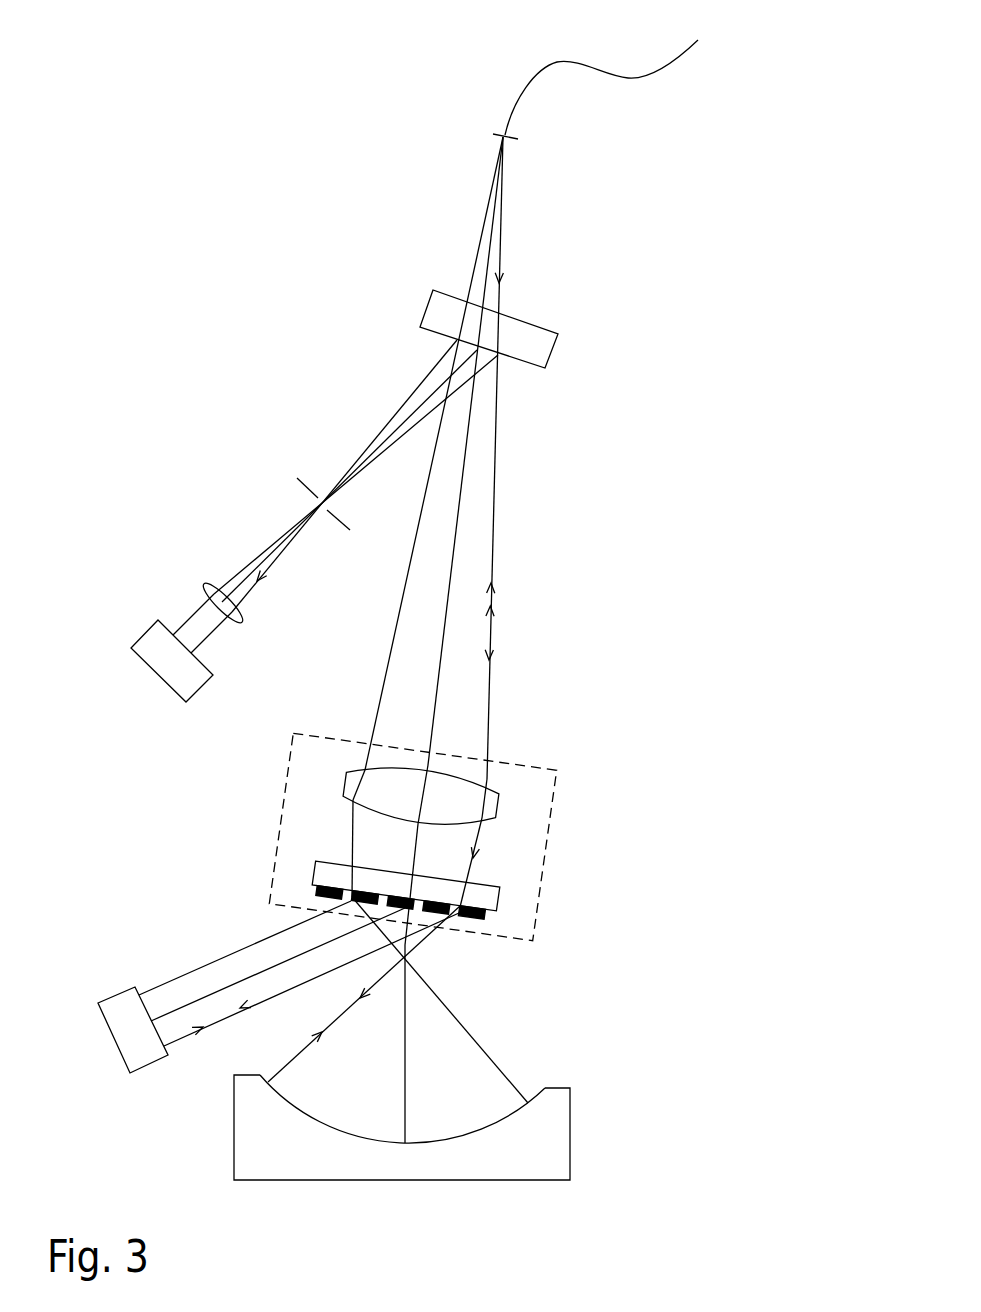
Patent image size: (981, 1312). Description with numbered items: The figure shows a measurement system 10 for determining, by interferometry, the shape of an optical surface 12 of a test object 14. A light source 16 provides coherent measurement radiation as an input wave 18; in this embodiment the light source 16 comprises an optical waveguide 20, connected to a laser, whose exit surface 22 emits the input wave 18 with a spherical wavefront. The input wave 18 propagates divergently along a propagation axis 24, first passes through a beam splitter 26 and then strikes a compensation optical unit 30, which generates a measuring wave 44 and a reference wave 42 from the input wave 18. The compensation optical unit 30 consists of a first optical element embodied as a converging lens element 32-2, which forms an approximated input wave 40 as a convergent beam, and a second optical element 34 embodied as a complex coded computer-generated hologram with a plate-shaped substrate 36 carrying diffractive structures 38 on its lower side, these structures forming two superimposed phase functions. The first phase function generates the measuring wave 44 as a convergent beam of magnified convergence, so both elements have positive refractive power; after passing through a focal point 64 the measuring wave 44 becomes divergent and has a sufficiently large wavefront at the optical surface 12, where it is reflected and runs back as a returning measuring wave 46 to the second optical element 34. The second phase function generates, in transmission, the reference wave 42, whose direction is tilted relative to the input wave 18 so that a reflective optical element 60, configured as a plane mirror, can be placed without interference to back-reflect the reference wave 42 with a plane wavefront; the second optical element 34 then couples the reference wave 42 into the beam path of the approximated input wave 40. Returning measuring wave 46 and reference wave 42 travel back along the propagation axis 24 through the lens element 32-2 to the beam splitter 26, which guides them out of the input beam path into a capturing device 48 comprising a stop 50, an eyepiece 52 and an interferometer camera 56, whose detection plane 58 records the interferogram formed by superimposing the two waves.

The measurement system 10 is at (376, 621).
The optical surface 12 is at (430, 1140).
The test object 14 is at (434, 1122).
The light source 16 is at (515, 62).
The input wave 18 is at (505, 255).
The optical waveguide 20 is at (637, 78).
The exit surface 22 is at (512, 140).
The propagation axis 24 is at (467, 440).
The beam splitter 26 is at (553, 353).
The compensation optical unit 30 is at (412, 825).
The converging lens element 32-2 is at (340, 788).
The second optical element 34 is at (412, 872).
The substrate 36 is at (313, 873).
The diffractive structures 38 is at (322, 903).
The approximated input wave 40 is at (480, 855).
The reference wave 42 is at (500, 588).
The measuring wave 44 is at (369, 997).
The returning measuring wave 46 is at (497, 615).
The capturing device 48 is at (302, 537).
The stop 50 is at (300, 488).
The eyepiece 52 is at (248, 620).
The interferometer camera 56 is at (153, 677).
The detection plane 58 is at (207, 660).
The reflective optical element 60 is at (108, 1032).
The focal point 64 is at (415, 957).